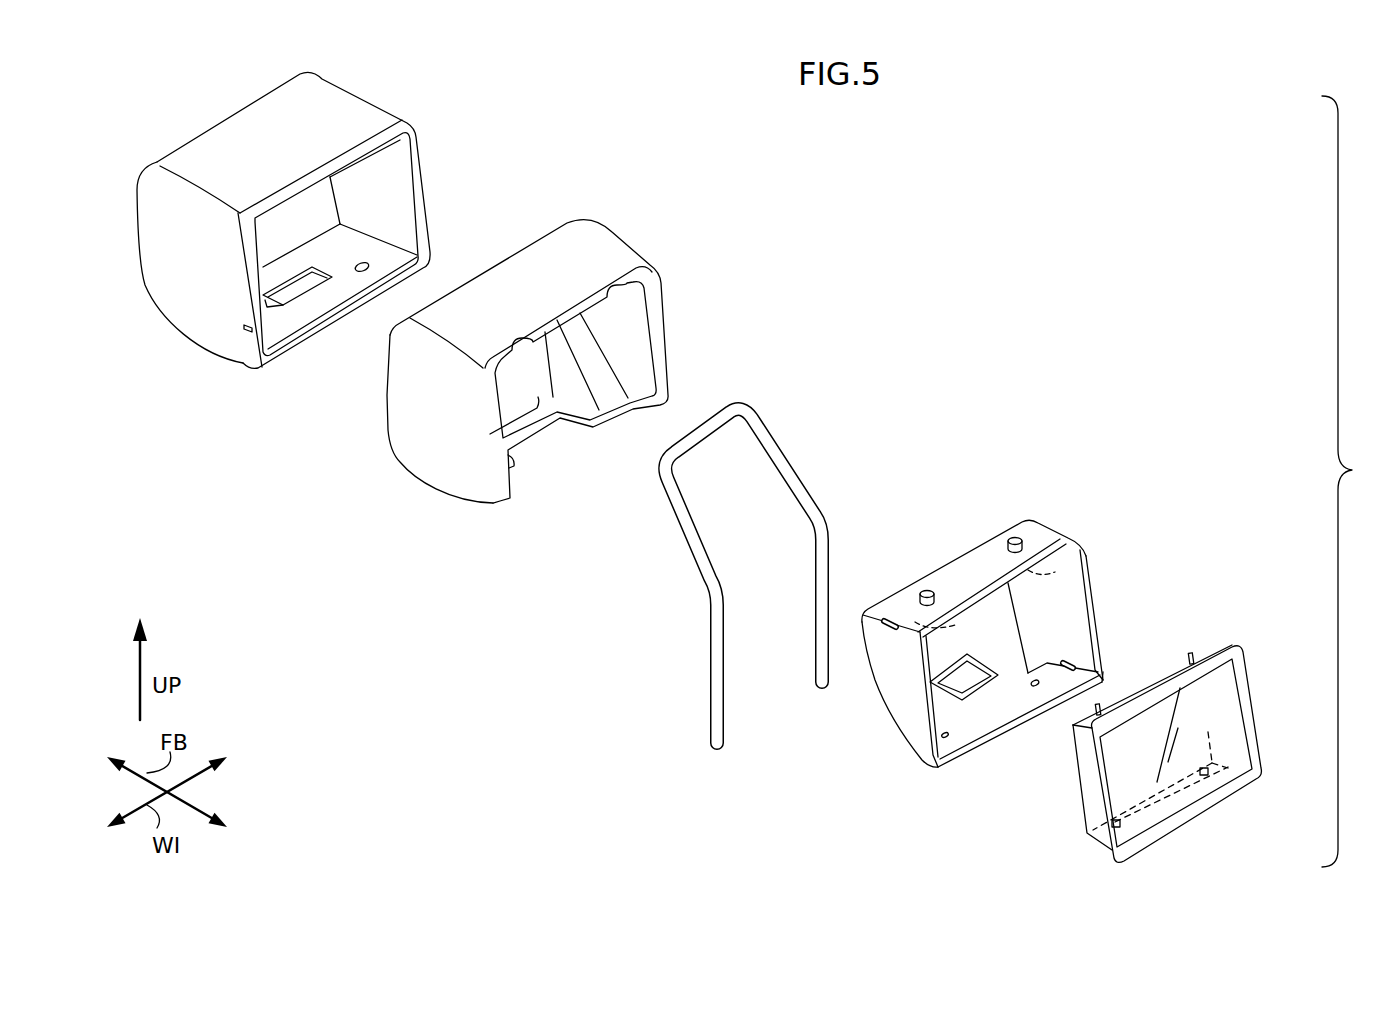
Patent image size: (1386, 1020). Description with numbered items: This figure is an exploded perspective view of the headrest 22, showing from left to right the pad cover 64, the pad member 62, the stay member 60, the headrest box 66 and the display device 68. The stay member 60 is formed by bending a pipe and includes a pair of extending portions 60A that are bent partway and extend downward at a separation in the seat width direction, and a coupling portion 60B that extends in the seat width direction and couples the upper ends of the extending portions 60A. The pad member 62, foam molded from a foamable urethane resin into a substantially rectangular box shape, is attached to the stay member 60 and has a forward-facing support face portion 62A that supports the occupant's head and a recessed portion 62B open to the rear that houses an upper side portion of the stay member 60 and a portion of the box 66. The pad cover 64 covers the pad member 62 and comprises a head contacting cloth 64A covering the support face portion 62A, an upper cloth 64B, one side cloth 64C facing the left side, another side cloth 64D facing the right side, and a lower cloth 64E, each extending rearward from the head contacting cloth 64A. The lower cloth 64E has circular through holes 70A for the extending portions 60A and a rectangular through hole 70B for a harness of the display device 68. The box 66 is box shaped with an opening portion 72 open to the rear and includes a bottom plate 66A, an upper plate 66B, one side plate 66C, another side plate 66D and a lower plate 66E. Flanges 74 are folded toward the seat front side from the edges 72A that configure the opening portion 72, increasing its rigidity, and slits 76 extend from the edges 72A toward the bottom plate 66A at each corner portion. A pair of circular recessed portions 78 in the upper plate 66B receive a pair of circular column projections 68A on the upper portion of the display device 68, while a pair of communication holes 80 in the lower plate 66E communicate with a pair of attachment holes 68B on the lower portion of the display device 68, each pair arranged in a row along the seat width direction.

The headrest 22 is at (1166, 166).
The stay member 60 is at (822, 462).
The extending portions 60A is at (824, 512).
The coupling portion 60B is at (707, 412).
The pad member 62 is at (668, 267).
The support face portion 62A is at (507, 283).
The recessed portion 62B is at (490, 440).
The pad cover 64 is at (432, 126).
The head contacting cloth 64A is at (233, 157).
The upper cloth 64B is at (327, 127).
The one side cloth 64C is at (197, 297).
The another side cloth 64D is at (387, 187).
The lower cloth 64E is at (287, 318).
The headrest box 66 is at (1098, 558).
The bottom plate 66A is at (955, 583).
The upper plate 66B is at (980, 540).
The one side plate 66C is at (897, 700).
The another side plate 66D is at (1060, 613).
The lower plate 66E is at (993, 713).
The display device 68 is at (1265, 680).
The circular column projections 68A is at (1192, 655).
The attachment holes 68B is at (1212, 788).
The circular through holes 70A is at (377, 258).
The rectangular through hole 70B is at (307, 283).
The opening portion 72 is at (977, 720).
The edges 72A is at (1025, 707).
The flanges 74 is at (968, 640).
The slits 76 is at (1057, 530).
The recessed portions 78 is at (1027, 533).
The communication holes 80 is at (947, 740).